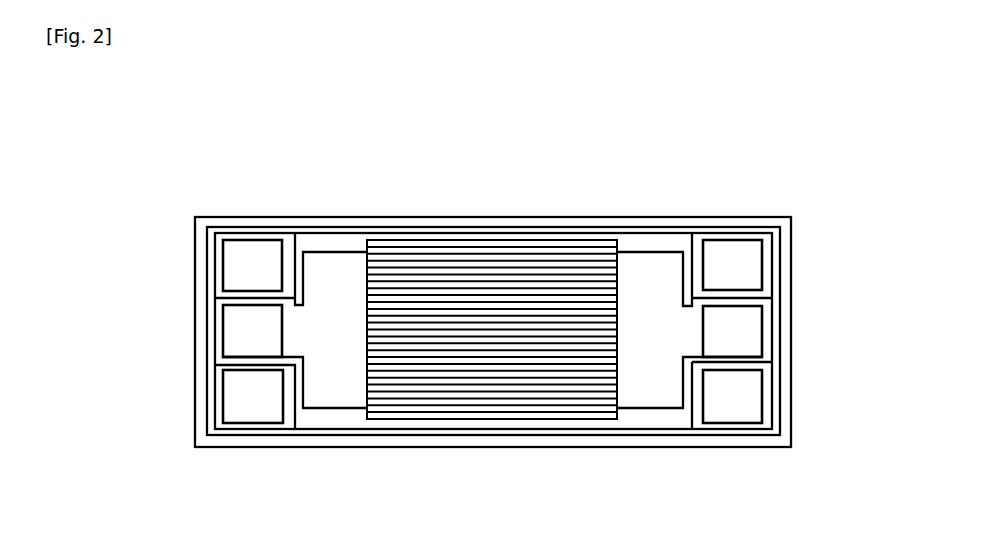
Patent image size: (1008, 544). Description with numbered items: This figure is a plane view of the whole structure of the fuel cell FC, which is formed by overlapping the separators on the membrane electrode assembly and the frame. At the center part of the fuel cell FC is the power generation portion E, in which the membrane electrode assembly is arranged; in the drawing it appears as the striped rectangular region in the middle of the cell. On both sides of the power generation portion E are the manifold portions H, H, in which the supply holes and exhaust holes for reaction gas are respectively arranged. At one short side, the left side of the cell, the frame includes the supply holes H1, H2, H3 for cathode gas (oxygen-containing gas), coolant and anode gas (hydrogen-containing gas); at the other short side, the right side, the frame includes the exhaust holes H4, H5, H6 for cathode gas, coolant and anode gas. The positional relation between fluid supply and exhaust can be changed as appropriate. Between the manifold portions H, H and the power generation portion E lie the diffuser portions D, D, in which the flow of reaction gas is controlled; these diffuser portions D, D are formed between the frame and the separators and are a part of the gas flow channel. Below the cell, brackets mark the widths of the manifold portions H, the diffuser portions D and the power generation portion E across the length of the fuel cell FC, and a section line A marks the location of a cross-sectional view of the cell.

The fuel cell FC is at (360, 216).
The supply hole H1 is at (235, 272).
The supply hole H2 is at (235, 338).
The supply hole H3 is at (235, 403).
The exhaust hole H4 is at (748, 267).
The exhaust hole H5 is at (748, 331).
The exhaust hole H6 is at (748, 403).
The power generation portion E is at (615, 468).
The diffuser portion D is at (373, 468).
The manifold portion H is at (285, 468).
The section line A- A is at (768, 158).